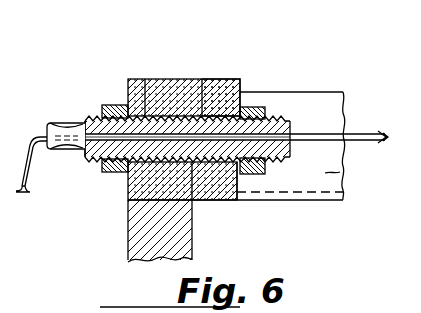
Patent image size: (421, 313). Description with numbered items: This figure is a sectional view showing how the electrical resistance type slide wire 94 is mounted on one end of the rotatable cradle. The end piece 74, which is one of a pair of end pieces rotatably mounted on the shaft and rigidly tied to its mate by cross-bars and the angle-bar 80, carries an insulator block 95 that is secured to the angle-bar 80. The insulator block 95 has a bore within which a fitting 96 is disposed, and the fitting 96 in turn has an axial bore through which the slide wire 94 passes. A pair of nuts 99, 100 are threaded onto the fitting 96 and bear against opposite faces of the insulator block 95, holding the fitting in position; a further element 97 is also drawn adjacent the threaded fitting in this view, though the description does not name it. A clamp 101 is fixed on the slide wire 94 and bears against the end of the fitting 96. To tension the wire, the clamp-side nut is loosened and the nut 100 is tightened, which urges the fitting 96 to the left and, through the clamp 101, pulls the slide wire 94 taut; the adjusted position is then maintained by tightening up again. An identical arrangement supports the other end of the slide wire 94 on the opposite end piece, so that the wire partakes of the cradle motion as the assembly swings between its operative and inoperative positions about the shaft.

The end piece 74 is at (182, 232).
The angle-bar 80 is at (323, 110).
The slide wire 94 is at (367, 143).
The insulator block 95 is at (178, 88).
The fitting 96 is at (203, 112).
The nut 97 is at (147, 113).
The nut 99 is at (113, 105).
The nut 100 is at (252, 110).
The clamp 101 is at (51, 123).